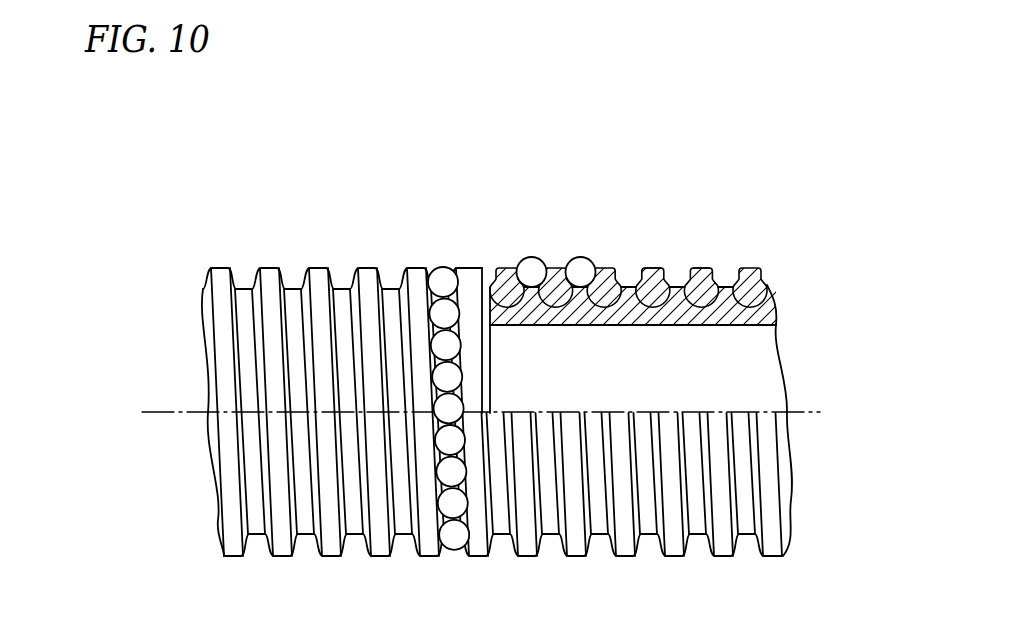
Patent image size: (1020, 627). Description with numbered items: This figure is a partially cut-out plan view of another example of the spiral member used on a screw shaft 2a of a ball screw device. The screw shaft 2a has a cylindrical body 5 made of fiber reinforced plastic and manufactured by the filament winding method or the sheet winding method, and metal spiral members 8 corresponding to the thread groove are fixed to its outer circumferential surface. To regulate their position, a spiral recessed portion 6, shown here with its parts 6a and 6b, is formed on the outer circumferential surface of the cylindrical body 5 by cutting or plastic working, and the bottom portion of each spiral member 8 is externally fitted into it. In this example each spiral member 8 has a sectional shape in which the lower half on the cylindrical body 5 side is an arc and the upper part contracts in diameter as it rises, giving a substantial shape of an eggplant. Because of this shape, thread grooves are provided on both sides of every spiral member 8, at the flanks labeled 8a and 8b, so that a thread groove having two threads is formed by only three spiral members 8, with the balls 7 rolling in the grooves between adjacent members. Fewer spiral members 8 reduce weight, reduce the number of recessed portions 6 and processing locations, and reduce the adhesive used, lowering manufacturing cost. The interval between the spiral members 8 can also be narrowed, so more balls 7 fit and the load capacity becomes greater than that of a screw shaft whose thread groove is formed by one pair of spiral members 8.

The screw shaft 2a is at (486, 230).
The cylindrical body 5 is at (641, 283).
The recessed portion 6 is at (628, 338).
The first groove surface of nut-side ball rolling groove 6a is at (655, 300).
The second groove surface of nut-side ball rolling groove 6b is at (706, 300).
The ball 7 is at (439, 268).
The spiral member 8 is at (635, 220).
The first groove surface of screw-side ball rolling groove 8a is at (649, 268).
The second groove surface of screw-side ball rolling groove 8b is at (716, 231).